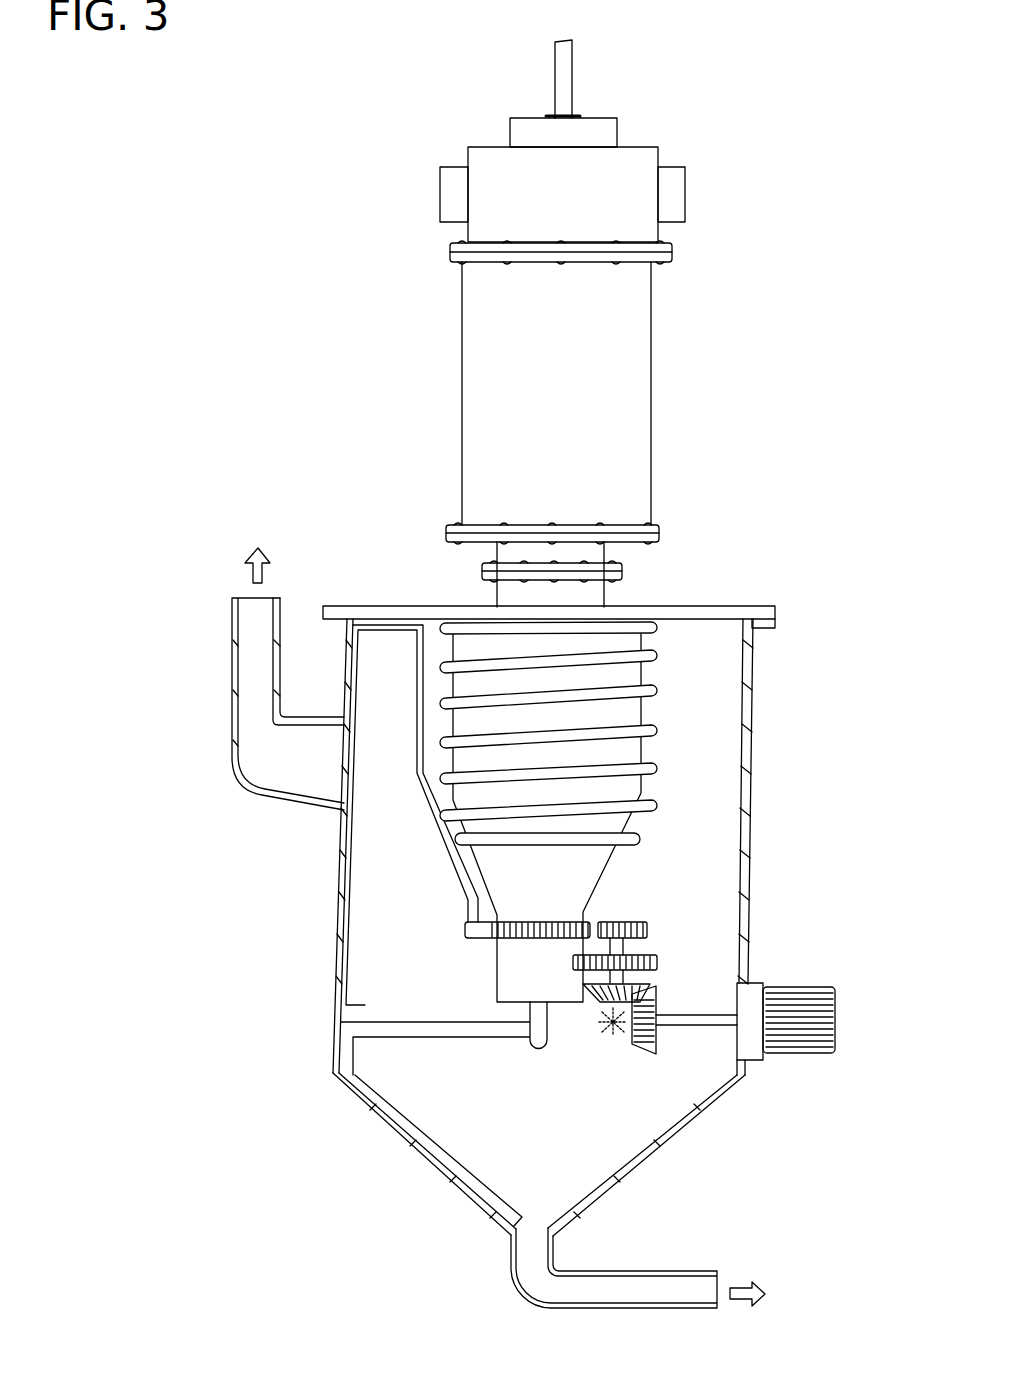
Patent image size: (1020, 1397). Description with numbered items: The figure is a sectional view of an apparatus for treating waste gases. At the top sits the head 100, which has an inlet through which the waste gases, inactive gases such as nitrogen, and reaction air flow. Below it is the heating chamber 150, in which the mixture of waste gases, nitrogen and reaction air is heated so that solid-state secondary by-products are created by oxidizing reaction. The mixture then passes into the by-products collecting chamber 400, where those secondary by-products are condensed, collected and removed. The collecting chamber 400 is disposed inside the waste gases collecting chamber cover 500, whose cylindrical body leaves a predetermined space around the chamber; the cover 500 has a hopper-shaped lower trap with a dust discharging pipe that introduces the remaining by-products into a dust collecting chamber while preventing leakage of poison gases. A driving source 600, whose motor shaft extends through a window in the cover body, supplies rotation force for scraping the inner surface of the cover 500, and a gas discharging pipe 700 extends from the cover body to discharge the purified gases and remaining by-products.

The head 100 is at (673, 161).
The heating chamber 150 is at (660, 385).
The by-products collecting chamber 400 is at (693, 728).
The waste gases collecting chamber cover 500 is at (752, 873).
The driving source 600 is at (604, 1037).
The gas discharging pipe 700 is at (230, 700).